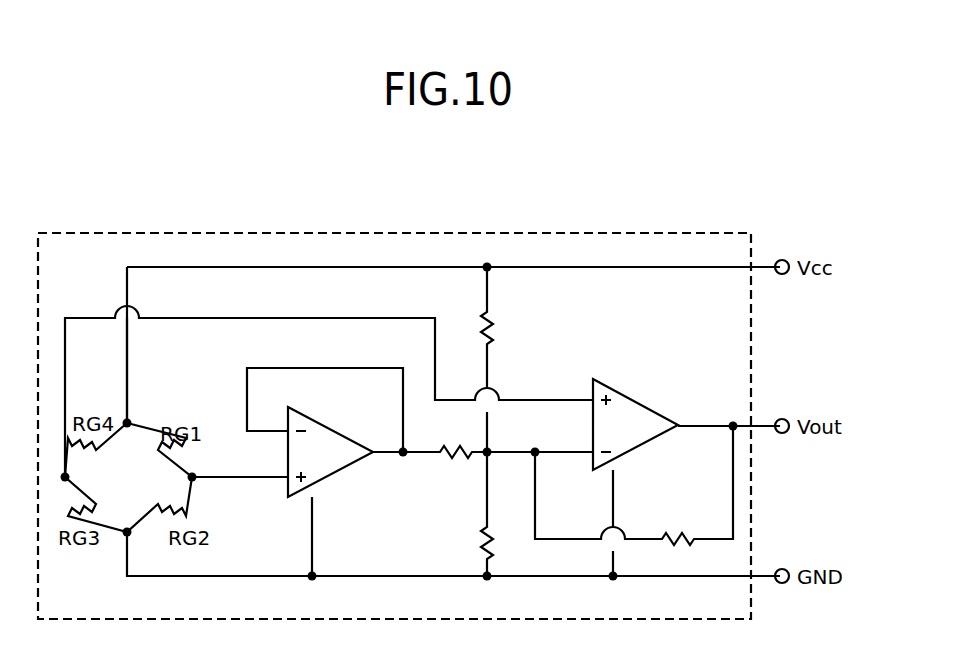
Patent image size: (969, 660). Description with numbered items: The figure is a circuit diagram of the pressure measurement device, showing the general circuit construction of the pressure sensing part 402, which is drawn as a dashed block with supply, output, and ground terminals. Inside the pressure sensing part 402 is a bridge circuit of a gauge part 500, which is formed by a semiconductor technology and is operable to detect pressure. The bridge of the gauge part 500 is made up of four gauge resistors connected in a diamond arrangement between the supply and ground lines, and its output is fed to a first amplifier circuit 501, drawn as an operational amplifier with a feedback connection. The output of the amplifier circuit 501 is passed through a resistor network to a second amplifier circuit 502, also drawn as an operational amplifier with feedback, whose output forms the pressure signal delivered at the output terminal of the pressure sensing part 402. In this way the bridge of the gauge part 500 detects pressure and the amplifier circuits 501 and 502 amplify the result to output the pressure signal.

The pressure sensing part 402 is at (600, 233).
The gauge part 500 is at (140, 422).
The amplifier circuit 501 is at (332, 475).
The amplifier circuit 502 is at (622, 393).